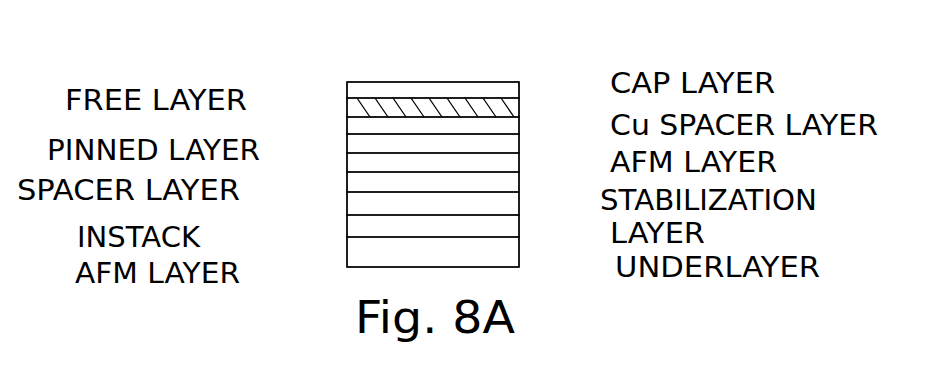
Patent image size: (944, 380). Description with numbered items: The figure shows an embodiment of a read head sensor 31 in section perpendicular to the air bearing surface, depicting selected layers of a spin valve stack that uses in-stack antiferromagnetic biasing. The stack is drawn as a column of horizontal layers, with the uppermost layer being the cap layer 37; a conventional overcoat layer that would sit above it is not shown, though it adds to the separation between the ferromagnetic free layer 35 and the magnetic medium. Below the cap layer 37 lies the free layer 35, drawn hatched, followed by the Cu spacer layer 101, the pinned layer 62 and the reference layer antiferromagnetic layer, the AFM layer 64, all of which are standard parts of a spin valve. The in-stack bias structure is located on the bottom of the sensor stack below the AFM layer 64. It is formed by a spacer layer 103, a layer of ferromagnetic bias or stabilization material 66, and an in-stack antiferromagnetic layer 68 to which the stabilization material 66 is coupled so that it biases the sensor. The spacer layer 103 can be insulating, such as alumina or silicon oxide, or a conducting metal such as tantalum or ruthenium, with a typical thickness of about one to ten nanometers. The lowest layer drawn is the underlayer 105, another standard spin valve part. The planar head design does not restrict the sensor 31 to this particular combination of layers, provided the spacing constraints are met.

The sensor 31 is at (363, 57).
The cap layer 37 is at (515, 90).
The free layer 35 is at (357, 105).
The Cu spacer layer 101 is at (511, 126).
The pinned layer 62 is at (356, 146).
The AFM layer 64 is at (507, 164).
The spacer layer 103 is at (357, 184).
The stabilization material 66 is at (513, 206).
The in-stack antiferromagnetic layer 68 is at (351, 231).
The underlayer 105 is at (512, 257).